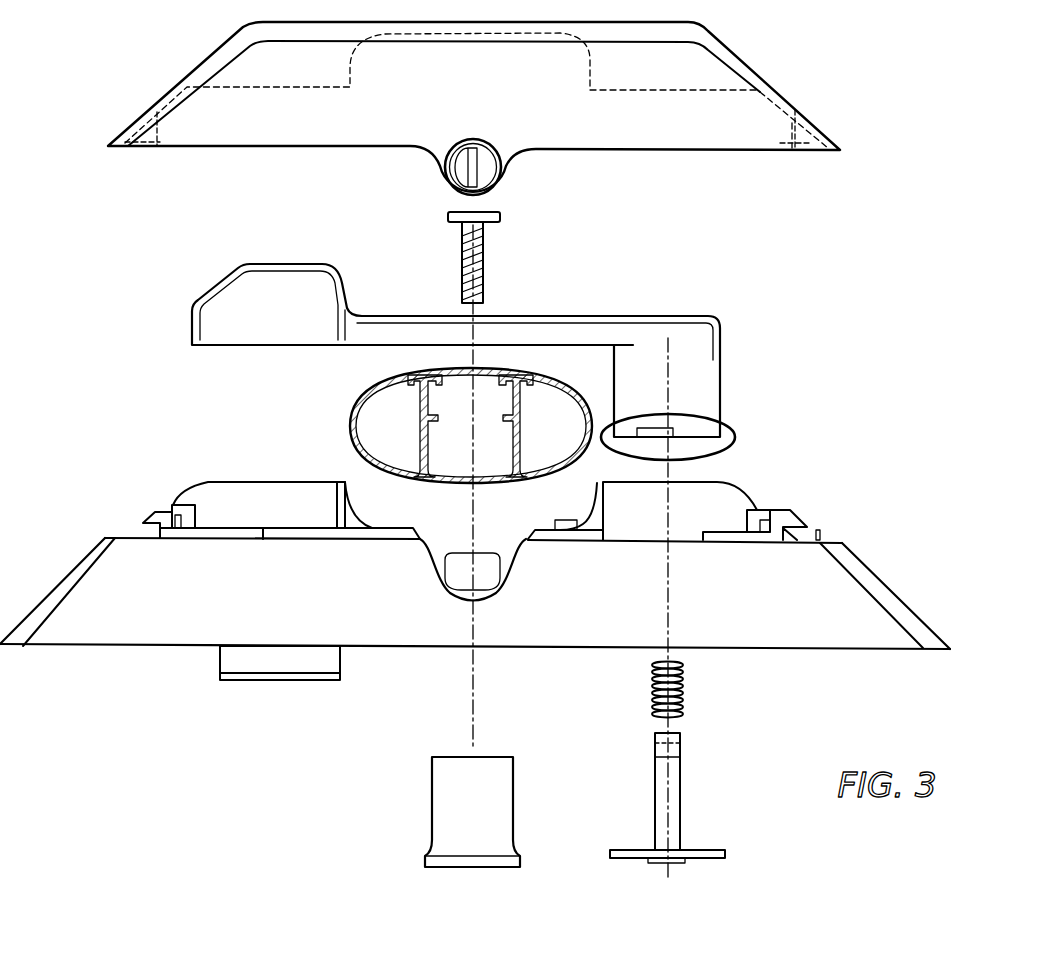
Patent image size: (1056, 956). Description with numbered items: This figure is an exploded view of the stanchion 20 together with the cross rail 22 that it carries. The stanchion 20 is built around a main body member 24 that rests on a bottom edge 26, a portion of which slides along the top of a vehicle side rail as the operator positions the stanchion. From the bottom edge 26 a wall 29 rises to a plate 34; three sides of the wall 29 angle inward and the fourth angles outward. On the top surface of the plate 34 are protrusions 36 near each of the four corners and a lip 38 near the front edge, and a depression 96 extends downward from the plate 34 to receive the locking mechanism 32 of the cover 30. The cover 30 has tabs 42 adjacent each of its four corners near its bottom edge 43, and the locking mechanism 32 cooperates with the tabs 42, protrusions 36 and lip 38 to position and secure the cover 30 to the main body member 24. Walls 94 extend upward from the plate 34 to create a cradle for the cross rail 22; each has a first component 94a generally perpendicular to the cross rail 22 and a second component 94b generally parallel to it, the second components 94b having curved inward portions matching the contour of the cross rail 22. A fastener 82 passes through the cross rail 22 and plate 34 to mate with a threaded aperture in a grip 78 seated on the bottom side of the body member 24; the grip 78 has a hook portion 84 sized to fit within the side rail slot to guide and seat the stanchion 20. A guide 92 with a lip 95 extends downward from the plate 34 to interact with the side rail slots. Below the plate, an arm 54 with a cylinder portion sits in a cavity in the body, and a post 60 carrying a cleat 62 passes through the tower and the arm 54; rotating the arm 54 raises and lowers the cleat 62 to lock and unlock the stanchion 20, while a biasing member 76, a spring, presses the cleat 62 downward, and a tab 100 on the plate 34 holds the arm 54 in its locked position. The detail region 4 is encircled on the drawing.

The stanchion 20 is at (111, 125).
The cover 30 is at (778, 82).
The bottom edge 43 is at (128, 146).
The tabs 42 is at (800, 150).
The locking mechanism 32 is at (495, 168).
The fastener 82 is at (502, 218).
The arm 54 is at (367, 335).
The detail region circle 4 is at (735, 437).
The cross rail 22 is at (353, 410).
The walls 94 is at (208, 496).
The second component 94b is at (340, 481).
The first component 94a is at (730, 502).
The plate 34 is at (145, 532).
The protrusions 36 is at (803, 517).
The lip 38 is at (277, 535).
The tab 100 is at (570, 522).
The main body member 24 is at (492, 637).
The wall 29 is at (100, 623).
The bottom edge 26 is at (924, 650).
The depression 96 is at (456, 600).
The guide 92 is at (271, 659).
The lip 95 is at (220, 677).
The grip 78 is at (503, 858).
The hook portion 84 is at (426, 860).
The biasing member 76 is at (684, 700).
The post 60 is at (683, 770).
The cleat 62 is at (708, 853).